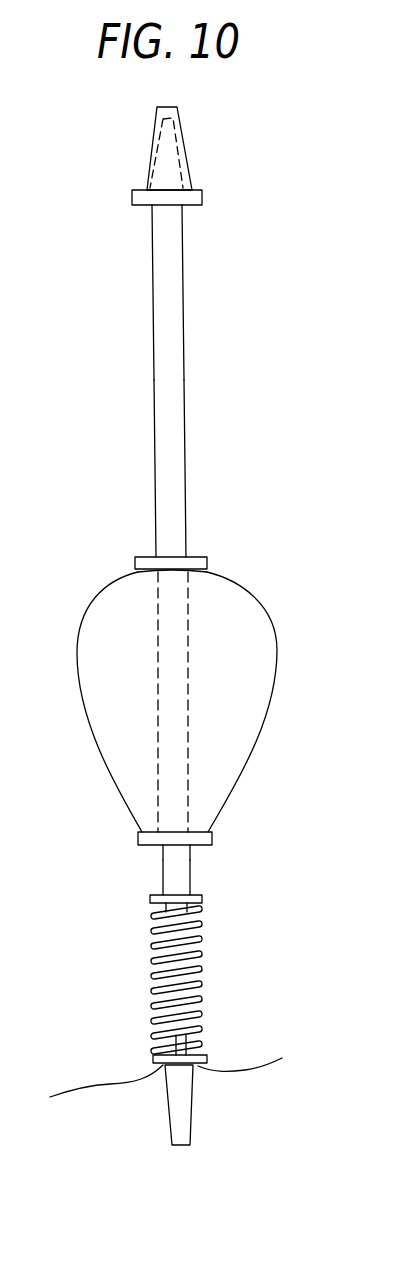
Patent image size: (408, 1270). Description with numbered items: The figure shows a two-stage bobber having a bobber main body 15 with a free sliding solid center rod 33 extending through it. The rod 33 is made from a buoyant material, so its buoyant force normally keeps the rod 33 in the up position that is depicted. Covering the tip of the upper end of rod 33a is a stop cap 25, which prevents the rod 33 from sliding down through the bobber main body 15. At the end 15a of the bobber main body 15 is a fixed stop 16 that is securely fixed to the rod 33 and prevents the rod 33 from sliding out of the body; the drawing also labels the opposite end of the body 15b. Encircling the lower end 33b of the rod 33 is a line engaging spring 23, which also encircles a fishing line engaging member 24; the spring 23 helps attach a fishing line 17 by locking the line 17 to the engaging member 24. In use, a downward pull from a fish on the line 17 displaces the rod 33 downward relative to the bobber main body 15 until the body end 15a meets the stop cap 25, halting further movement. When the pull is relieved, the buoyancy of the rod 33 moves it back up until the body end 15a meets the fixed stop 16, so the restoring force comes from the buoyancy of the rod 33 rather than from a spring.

The stop cap 25 is at (180, 148).
The upper end of rod 33a is at (172, 283).
The center rod 33 is at (219, 381).
The end of bobber main body 15a is at (196, 570).
The bobber main body 15 is at (240, 618).
The lower collar 15b is at (150, 829).
The fixed stop 16 is at (207, 845).
The lower end of rod 33b is at (180, 870).
The line engaging spring 23 is at (203, 965).
The fishing line engaging member 24 is at (203, 1038).
The fishing line 17 is at (110, 1080).